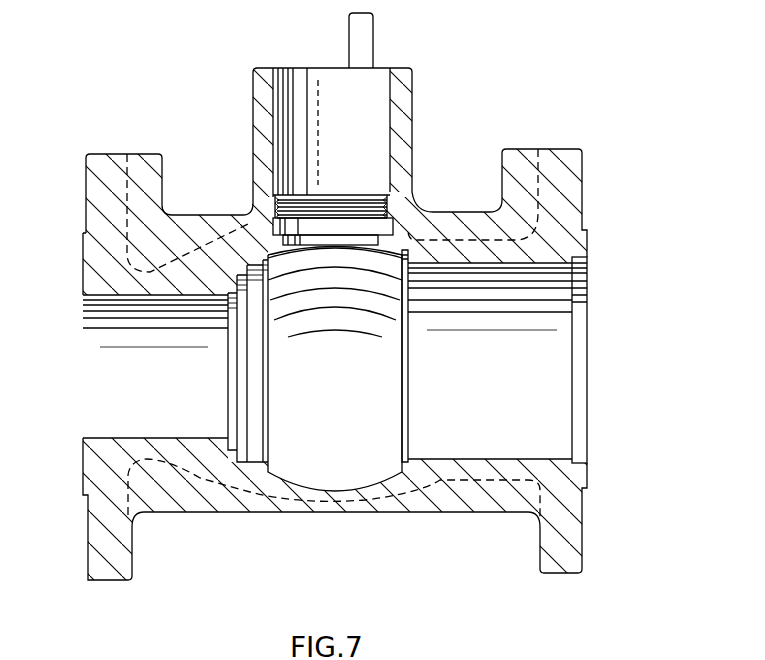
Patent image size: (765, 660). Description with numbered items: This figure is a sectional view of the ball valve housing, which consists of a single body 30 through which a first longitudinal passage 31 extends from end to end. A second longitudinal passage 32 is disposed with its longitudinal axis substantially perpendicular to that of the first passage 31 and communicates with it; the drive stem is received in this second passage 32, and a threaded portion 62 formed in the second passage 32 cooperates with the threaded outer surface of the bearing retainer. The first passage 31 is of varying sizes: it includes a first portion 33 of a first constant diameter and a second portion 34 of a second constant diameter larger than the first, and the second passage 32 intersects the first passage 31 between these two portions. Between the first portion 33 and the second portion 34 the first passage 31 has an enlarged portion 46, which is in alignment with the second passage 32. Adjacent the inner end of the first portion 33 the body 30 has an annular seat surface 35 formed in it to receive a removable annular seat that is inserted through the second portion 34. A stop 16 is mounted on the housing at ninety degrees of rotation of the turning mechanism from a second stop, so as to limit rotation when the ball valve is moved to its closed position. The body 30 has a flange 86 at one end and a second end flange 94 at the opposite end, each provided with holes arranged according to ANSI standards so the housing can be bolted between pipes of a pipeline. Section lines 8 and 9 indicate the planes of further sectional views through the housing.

The section line 8- 8 is at (333, 60).
The section line 9- 9 is at (463, 122).
The stop 16 is at (374, 45).
The body 30 is at (84, 530).
The first longitudinal passage 31 is at (115, 437).
The second longitudinal passage 32 is at (390, 103).
The first portion 33 is at (113, 297).
The second portion 34 is at (553, 266).
The annular seat surface 35 is at (237, 455).
The enlarged portion 46 is at (342, 488).
The threaded portion 62 is at (377, 200).
The flange 86 is at (565, 574).
The second end flange 94 is at (102, 581).